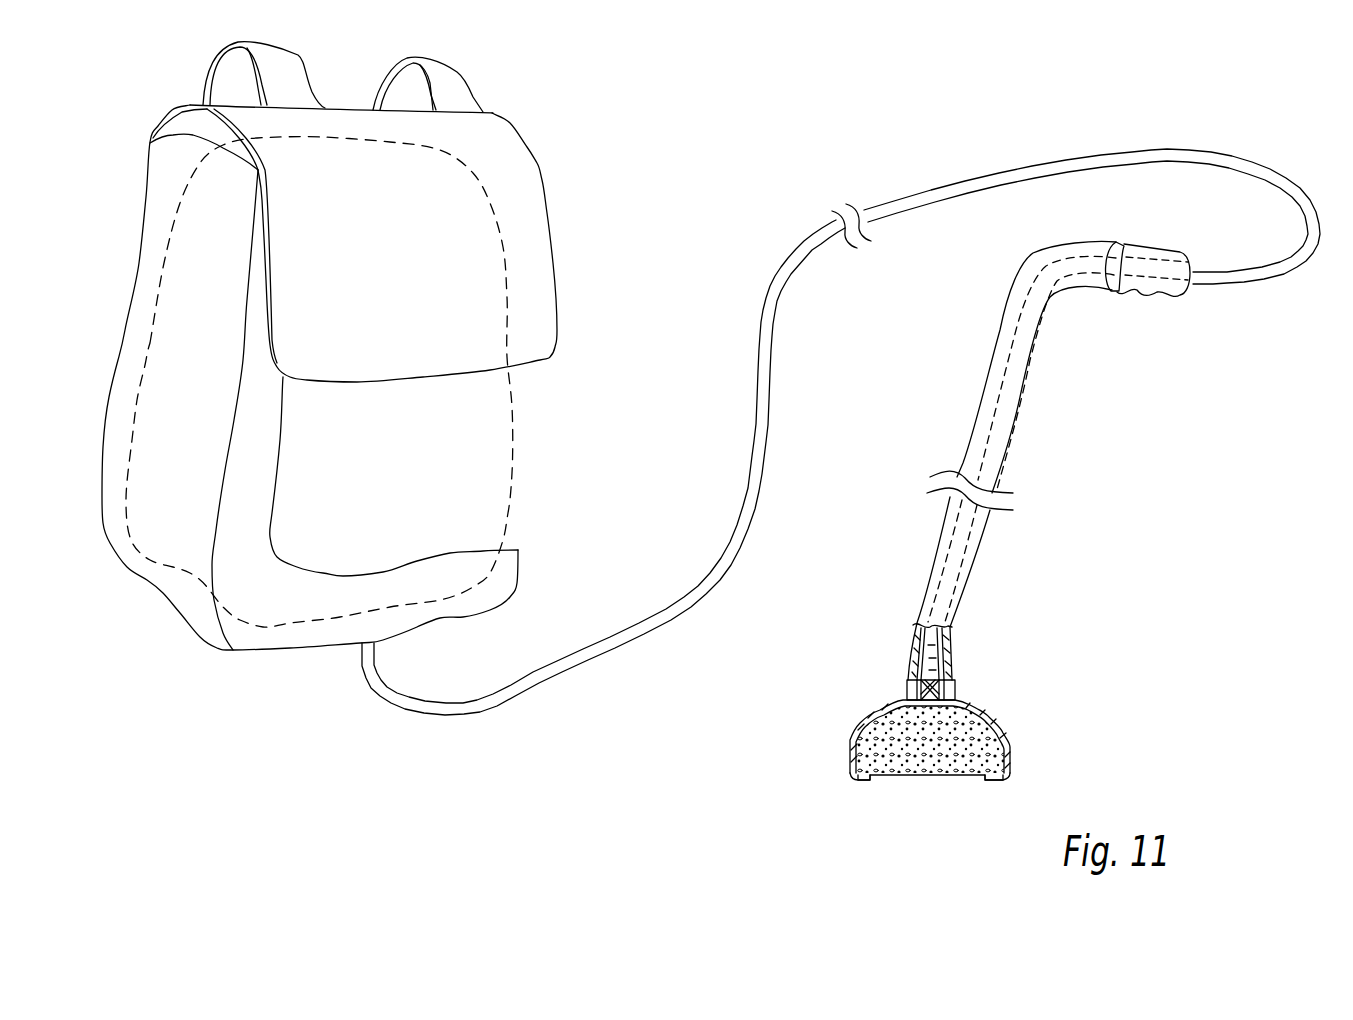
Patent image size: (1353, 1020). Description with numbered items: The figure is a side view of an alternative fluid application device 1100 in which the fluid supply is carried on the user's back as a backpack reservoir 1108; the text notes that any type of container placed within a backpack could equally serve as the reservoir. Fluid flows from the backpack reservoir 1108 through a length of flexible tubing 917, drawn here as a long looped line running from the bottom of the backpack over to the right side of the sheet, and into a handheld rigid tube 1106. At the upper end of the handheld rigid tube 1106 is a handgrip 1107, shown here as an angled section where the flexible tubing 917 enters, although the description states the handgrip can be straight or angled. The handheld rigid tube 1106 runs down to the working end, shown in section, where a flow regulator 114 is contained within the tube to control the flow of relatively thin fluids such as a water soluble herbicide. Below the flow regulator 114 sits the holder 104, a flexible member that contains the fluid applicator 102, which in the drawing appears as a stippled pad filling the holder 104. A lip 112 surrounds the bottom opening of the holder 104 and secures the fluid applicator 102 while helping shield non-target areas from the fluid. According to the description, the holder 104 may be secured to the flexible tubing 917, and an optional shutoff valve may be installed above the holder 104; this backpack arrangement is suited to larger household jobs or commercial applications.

The backpack reservoir 1108 is at (540, 173).
The flexible tubing 917 is at (1175, 149).
The handgrip 1107 is at (1150, 298).
The handheld rigid tube 1106 is at (963, 600).
The flow regulator 114 is at (907, 683).
The fluid applicator 102 is at (990, 727).
The holder 104 is at (1012, 767).
The lip 112 is at (863, 782).
The fluid application device 1100 is at (1222, 521).